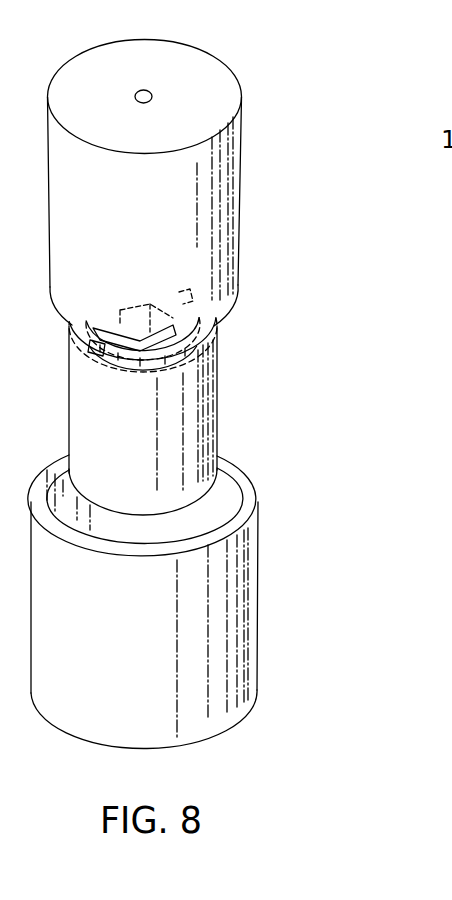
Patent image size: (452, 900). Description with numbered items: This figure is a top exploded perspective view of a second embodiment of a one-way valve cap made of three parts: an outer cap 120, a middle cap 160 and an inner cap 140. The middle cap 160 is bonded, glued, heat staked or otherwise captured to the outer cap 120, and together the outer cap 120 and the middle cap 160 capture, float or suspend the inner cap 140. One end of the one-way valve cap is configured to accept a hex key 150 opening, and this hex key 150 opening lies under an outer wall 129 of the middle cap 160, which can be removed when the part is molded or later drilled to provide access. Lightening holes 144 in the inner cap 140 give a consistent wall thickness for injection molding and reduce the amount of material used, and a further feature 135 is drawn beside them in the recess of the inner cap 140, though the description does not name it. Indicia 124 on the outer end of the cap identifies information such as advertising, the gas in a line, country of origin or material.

The outer cap 120 is at (255, 662).
The indicia 124 is at (107, 52).
The outer wall 129 is at (160, 93).
The lug 135 is at (97, 350).
The inner cap 140 is at (218, 382).
The lightening holes 144 is at (97, 338).
The hex key opening 150 is at (173, 320).
The middle cap 160 is at (238, 240).